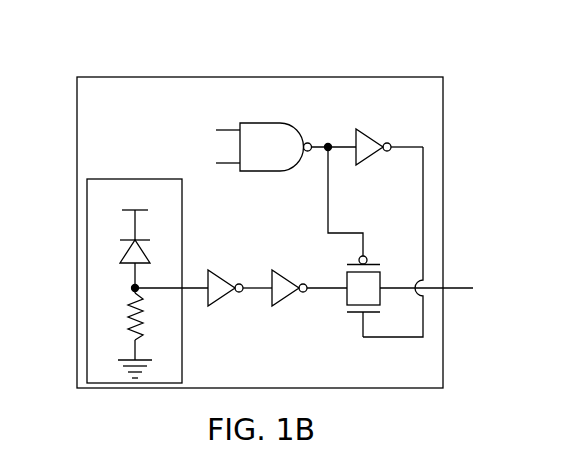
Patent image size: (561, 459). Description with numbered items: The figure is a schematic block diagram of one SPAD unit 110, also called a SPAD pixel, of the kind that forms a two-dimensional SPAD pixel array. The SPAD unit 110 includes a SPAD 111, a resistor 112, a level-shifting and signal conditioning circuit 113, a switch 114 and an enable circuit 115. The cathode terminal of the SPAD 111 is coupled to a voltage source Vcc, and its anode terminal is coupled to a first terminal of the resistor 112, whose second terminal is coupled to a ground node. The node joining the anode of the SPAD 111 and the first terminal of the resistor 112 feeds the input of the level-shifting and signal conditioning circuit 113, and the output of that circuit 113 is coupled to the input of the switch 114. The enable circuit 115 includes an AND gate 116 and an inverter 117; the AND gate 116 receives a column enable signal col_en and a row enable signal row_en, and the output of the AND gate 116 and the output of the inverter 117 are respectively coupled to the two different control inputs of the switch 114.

The SPAD unit 110 is at (104, 77).
The SPAD 111 is at (122, 251).
The resistor 112 is at (119, 316).
The level-shifting and signal conditioning circuit 113 is at (316, 273).
The switch 114 is at (381, 296).
The enable circuit 115 is at (400, 118).
The AND gate 116 is at (276, 161).
The inverter 117 is at (375, 156).